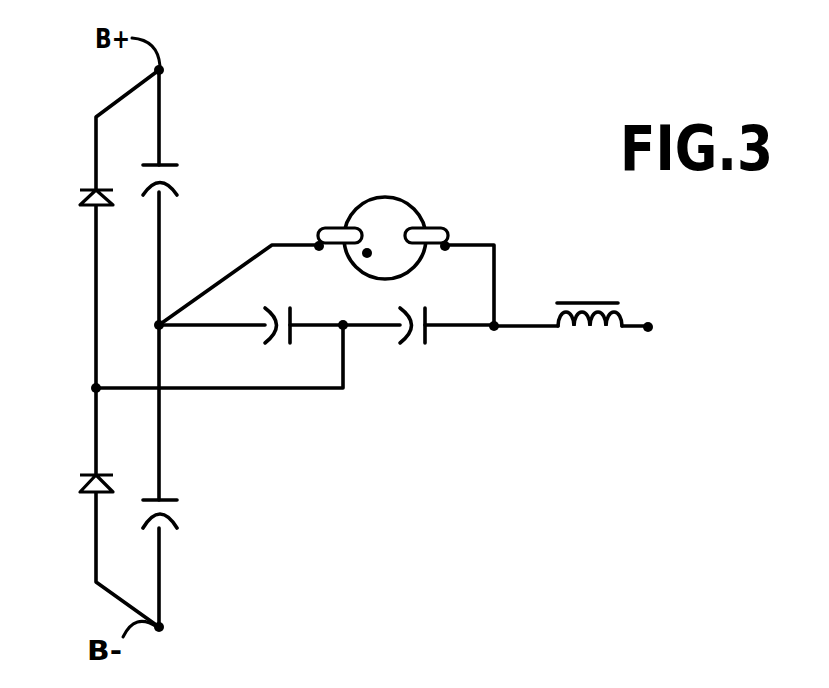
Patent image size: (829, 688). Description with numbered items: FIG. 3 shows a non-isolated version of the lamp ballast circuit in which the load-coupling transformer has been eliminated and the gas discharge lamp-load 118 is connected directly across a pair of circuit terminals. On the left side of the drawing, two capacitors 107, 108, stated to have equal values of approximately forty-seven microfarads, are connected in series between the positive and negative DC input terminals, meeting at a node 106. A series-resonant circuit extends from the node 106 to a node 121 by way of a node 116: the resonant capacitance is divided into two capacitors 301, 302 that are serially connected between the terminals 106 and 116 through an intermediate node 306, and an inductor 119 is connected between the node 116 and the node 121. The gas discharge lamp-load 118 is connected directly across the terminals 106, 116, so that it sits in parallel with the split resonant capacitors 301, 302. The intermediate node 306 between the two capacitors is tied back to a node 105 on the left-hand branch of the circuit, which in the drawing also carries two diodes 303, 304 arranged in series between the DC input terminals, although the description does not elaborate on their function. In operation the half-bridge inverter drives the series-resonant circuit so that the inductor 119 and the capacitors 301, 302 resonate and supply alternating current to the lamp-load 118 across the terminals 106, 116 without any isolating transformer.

The node 105 is at (94, 388).
The node 106 is at (157, 325).
The capacitor 107 is at (173, 166).
The capacitor 108 is at (173, 493).
The node 116 is at (494, 330).
The gas discharge lamp-load 118 is at (393, 196).
The inductor 119 is at (618, 303).
The node 121 is at (648, 330).
The capacitor 301 is at (280, 308).
The capacitor 302 is at (430, 333).
The diode 303 is at (80, 192).
The diode 304 is at (80, 480).
The node 306 is at (345, 328).